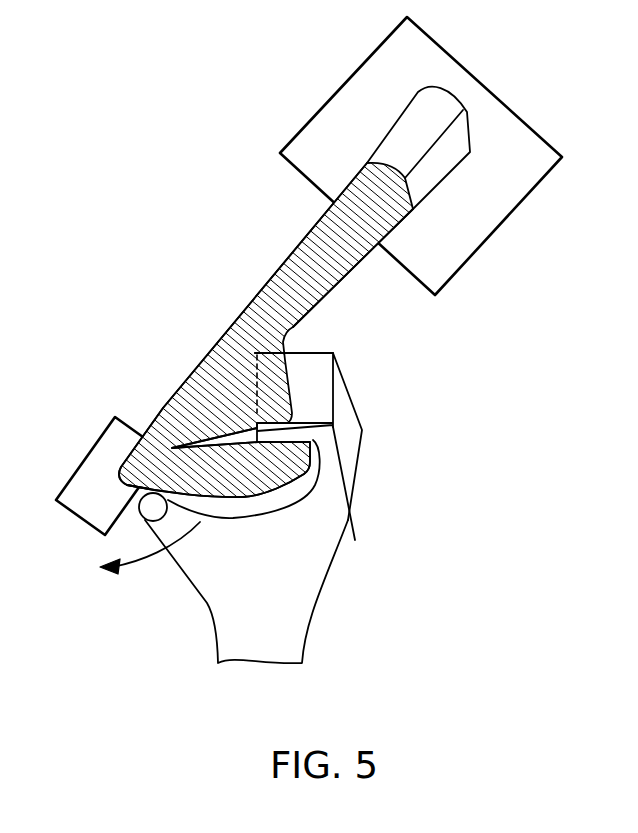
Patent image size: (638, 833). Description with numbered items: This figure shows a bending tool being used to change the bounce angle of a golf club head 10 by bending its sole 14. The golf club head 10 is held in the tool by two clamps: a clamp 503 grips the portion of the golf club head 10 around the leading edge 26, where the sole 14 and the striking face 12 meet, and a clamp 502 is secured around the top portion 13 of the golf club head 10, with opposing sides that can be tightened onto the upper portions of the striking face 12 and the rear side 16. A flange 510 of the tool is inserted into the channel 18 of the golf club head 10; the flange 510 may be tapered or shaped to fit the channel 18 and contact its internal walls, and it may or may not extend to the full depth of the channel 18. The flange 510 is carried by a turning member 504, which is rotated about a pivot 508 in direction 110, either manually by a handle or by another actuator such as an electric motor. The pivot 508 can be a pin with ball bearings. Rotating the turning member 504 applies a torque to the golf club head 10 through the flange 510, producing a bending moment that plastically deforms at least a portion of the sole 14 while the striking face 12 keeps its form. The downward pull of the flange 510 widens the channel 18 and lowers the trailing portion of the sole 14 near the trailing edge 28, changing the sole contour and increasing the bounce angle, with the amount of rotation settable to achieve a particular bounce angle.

The golf club head 10 is at (255, 247).
The striking face 12 is at (232, 326).
The top portion 13 is at (433, 115).
The sole 14 is at (260, 498).
The rear side 16 is at (341, 283).
The channel 18 is at (198, 432).
The leading edge 26 is at (120, 478).
The trailing edge 28 is at (355, 541).
The direction 110 is at (150, 562).
The clamp 502 is at (512, 110).
The clamp 503 is at (75, 517).
The turning member 504 is at (354, 408).
The pivot 508 is at (153, 512).
The flange 510 is at (318, 346).